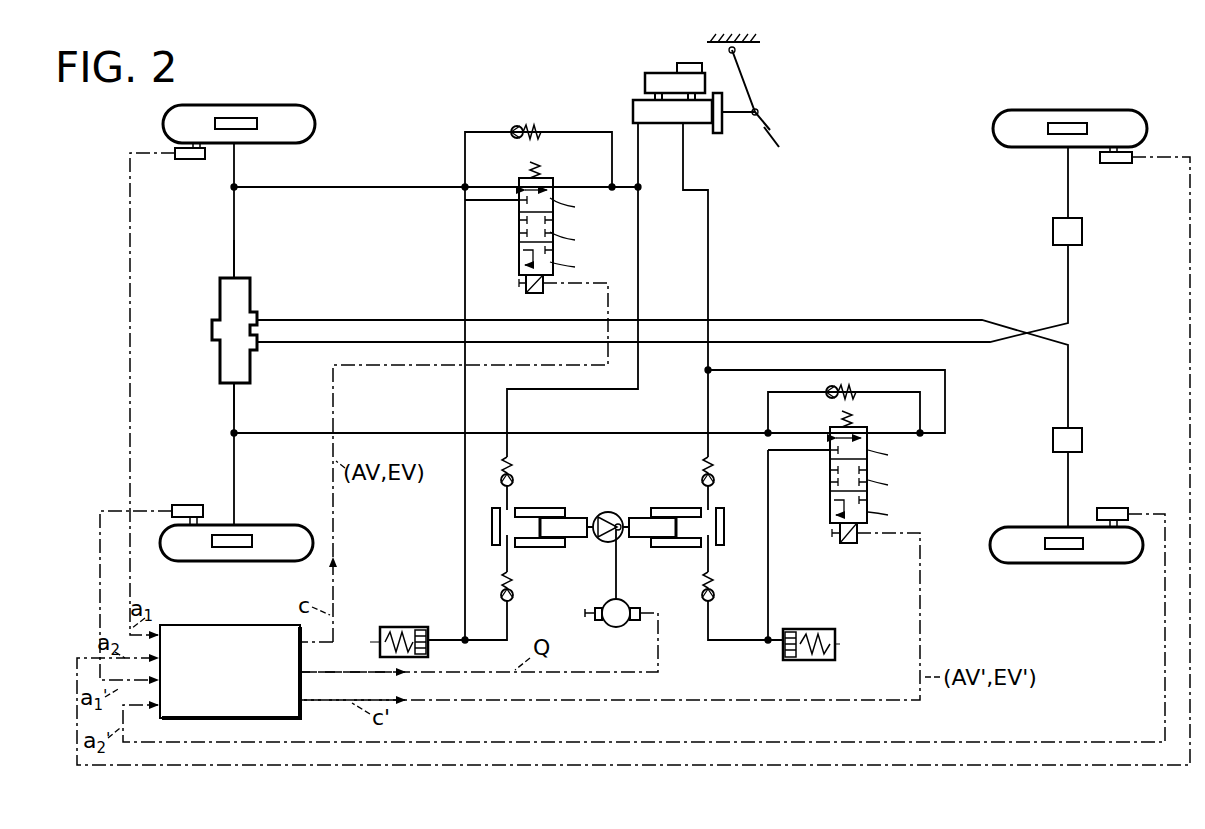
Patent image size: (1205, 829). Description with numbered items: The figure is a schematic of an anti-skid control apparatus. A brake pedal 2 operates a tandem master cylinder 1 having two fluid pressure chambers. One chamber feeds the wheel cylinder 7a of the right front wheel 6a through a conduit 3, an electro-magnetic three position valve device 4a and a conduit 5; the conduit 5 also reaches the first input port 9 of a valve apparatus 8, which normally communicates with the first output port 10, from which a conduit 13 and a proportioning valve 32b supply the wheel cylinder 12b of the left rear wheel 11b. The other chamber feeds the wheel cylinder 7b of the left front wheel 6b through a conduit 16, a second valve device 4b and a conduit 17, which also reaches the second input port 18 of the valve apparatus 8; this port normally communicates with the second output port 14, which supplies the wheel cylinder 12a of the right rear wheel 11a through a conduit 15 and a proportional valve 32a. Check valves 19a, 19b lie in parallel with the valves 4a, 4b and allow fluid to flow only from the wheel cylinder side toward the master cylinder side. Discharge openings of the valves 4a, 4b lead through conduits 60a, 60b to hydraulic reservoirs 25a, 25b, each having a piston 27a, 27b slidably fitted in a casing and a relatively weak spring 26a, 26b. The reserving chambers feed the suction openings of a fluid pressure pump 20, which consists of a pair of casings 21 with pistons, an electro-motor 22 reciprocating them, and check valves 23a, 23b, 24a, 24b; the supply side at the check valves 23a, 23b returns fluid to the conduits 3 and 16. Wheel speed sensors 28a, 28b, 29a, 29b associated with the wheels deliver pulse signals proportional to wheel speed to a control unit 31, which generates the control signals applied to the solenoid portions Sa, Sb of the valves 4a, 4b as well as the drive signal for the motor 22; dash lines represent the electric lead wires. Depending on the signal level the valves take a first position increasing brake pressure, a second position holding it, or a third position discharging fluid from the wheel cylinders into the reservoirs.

The tandem master cylinder 1 is at (626, 92).
The brake pedal 2 is at (765, 120).
The conduit 3 is at (639, 165).
The conduit 5 is at (384, 186).
The right front wheel 6a is at (292, 108).
The wheel cylinder 7a is at (228, 118).
The wheel speed sensor 28a is at (185, 160).
The left front wheel 6b is at (287, 553).
The wheel cylinder 7b is at (228, 549).
The wheel speed sensor 28b is at (190, 505).
The valve apparatus 8 is at (211, 301).
The first input port 9 is at (232, 276).
The first output port 10 is at (259, 318).
The second output port 14 is at (259, 344).
The second input port 18 is at (232, 385).
The conduit 13 is at (805, 320).
The conduit 15 is at (930, 343).
The conduit 16 is at (684, 170).
The conduit 17 is at (625, 432).
The electro-magnetic three position valve device 4a is at (518, 232).
The electro-magnetic three position valve device 4b is at (829, 483).
The solenoid portion Sa is at (528, 290).
The solenoid portion Sb is at (847, 543).
The check valve 19a is at (517, 127).
The check valve 19b is at (826, 388).
The conduit 60a is at (464, 265).
The conduit 60b is at (769, 548).
The right rear wheel 11a is at (1012, 109).
The wheel cylinder 12a is at (1065, 122).
The wheel speed sensor 29a is at (1120, 165).
The proportional valve 32a is at (1083, 232).
The left rear wheel 11b is at (1008, 564).
The wheel cylinder 12b is at (1066, 564).
The wheel speed sensor 29b is at (1117, 507).
The proportioning valve 32b is at (1083, 440).
The fluid pressure pump 20 is at (606, 508).
The casings 21 is at (545, 549).
The electro-motor 22 is at (612, 623).
The check valve 23a is at (702, 470).
The check valve 23b is at (513, 468).
The check valve 24a is at (702, 590).
The check valve 24b is at (513, 593).
The hydraulic reservoir 25a is at (412, 626).
The hydraulic reservoir 25b is at (810, 628).
The spring 26a is at (380, 637).
The spring 26b is at (808, 660).
The piston 27a is at (432, 648).
The piston 27b is at (783, 648).
The control unit 31 is at (230, 625).